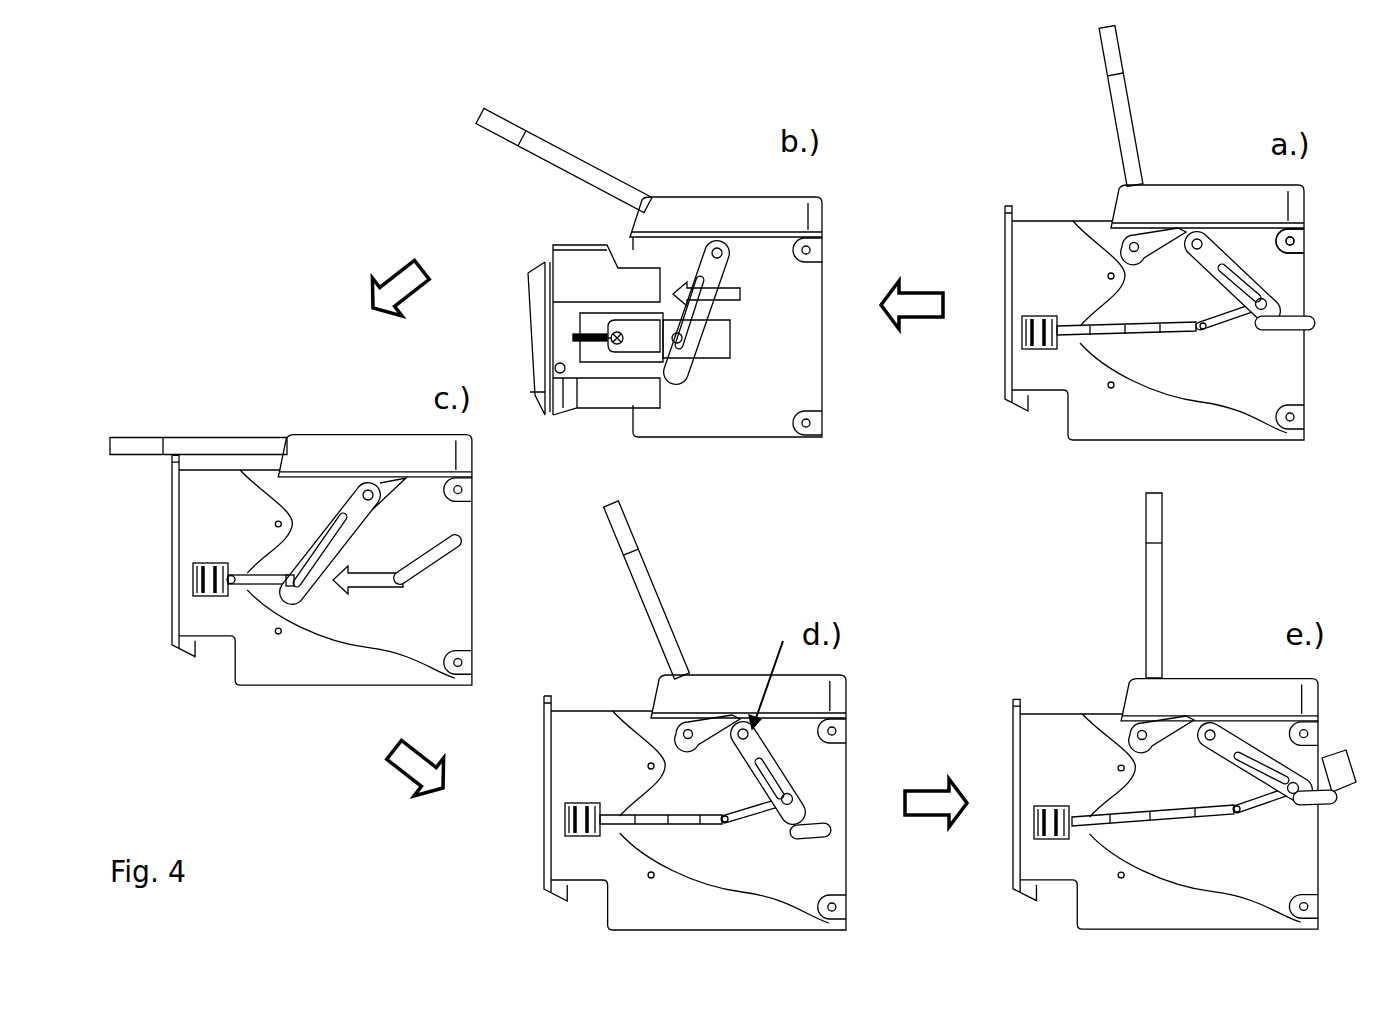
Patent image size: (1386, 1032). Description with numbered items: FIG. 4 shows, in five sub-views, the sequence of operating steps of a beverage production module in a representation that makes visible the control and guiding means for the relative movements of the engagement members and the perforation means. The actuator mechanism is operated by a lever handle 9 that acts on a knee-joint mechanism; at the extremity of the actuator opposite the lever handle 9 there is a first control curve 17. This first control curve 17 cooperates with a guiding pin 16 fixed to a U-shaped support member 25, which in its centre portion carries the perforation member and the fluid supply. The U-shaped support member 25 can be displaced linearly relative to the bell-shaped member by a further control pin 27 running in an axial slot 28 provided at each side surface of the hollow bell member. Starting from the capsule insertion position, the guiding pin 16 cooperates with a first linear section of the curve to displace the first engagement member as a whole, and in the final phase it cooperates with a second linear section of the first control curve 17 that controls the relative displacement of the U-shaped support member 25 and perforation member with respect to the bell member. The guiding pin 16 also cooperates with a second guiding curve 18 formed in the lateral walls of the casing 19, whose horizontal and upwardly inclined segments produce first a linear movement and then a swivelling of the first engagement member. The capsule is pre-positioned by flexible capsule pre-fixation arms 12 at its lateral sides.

The lever handle 9 is at (1111, 98).
The flexible capsule pre-fixation arms 12 is at (1024, 348).
The guiding pin 16 is at (990, 321).
The first control curve 17 is at (1291, 333).
The second guiding curve 18 is at (1205, 334).
The casing 19 is at (1305, 253).
The U-shaped support member 25 is at (726, 358).
The control pin 27 is at (618, 356).
The axial slot 28 is at (573, 337).